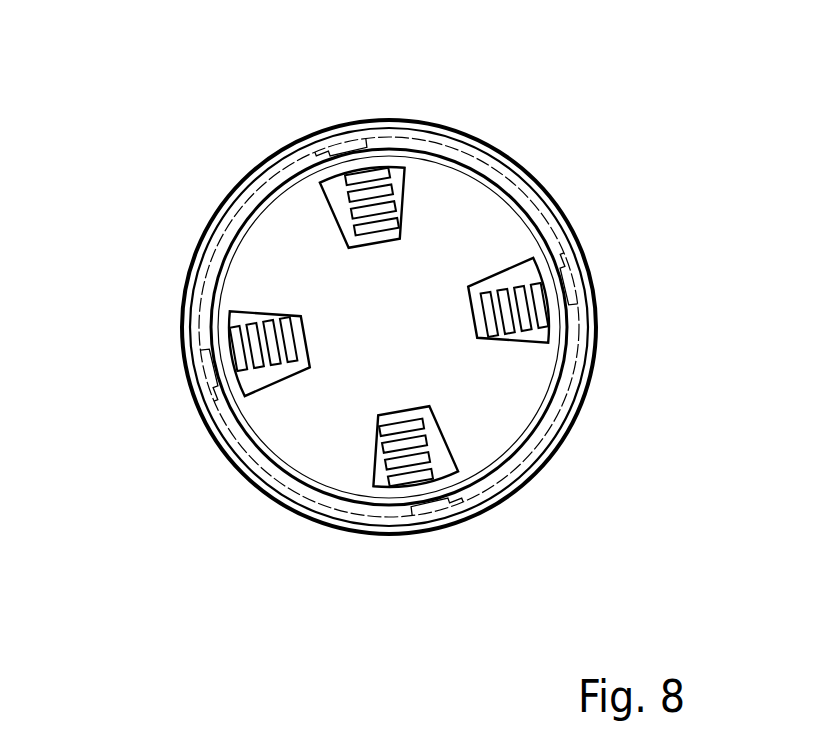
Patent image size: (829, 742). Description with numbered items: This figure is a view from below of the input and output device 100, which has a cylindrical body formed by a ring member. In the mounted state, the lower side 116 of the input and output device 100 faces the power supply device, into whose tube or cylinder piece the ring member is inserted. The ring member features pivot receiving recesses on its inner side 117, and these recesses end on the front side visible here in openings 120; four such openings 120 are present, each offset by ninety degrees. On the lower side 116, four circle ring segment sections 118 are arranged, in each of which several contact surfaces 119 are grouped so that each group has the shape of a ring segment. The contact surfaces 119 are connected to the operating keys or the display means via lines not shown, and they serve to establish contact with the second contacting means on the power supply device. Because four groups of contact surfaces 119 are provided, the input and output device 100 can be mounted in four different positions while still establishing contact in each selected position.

The input and output device 100 is at (533, 156).
The lower side 116 is at (493, 408).
The inner side 117 is at (538, 216).
The circle ring segment sections 118 is at (333, 192).
The contact surfaces 119 is at (384, 226).
The openings 120 is at (340, 170).